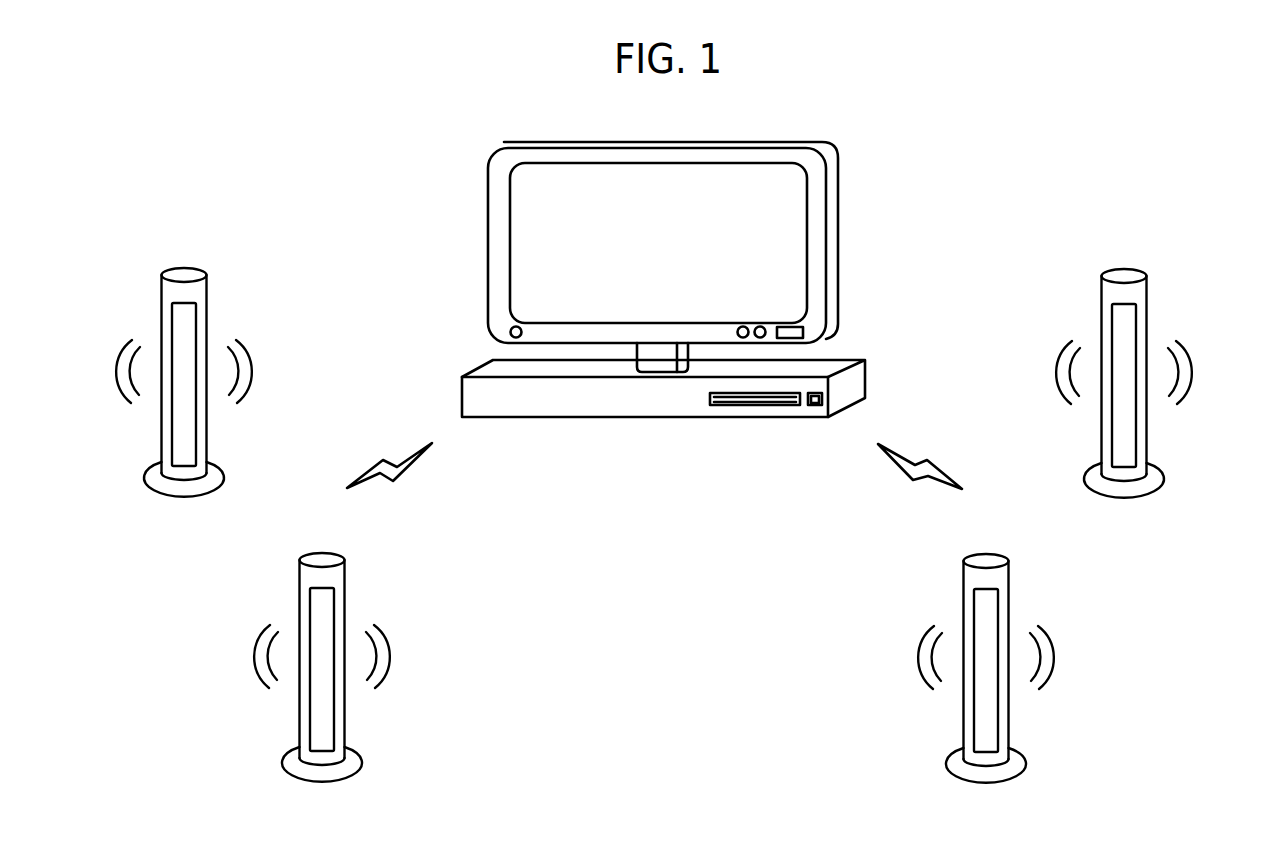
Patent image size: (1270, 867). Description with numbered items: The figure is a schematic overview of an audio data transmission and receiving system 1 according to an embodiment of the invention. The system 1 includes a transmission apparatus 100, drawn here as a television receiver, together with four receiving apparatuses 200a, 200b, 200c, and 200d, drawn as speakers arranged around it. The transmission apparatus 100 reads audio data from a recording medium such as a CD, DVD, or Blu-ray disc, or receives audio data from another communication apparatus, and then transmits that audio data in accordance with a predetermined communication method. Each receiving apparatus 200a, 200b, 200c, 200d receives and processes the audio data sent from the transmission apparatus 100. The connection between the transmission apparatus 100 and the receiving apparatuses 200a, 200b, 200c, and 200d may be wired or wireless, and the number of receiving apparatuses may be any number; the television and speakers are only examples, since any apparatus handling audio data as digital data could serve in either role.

The audio data transmission and receiving system 1 is at (311, 161).
The transmission apparatus 100 is at (838, 233).
The receiving apparatus 200a is at (208, 290).
The receiving apparatus 200b is at (346, 585).
The receiving apparatus 200c is at (1009, 585).
The receiving apparatus 200d is at (1148, 292).